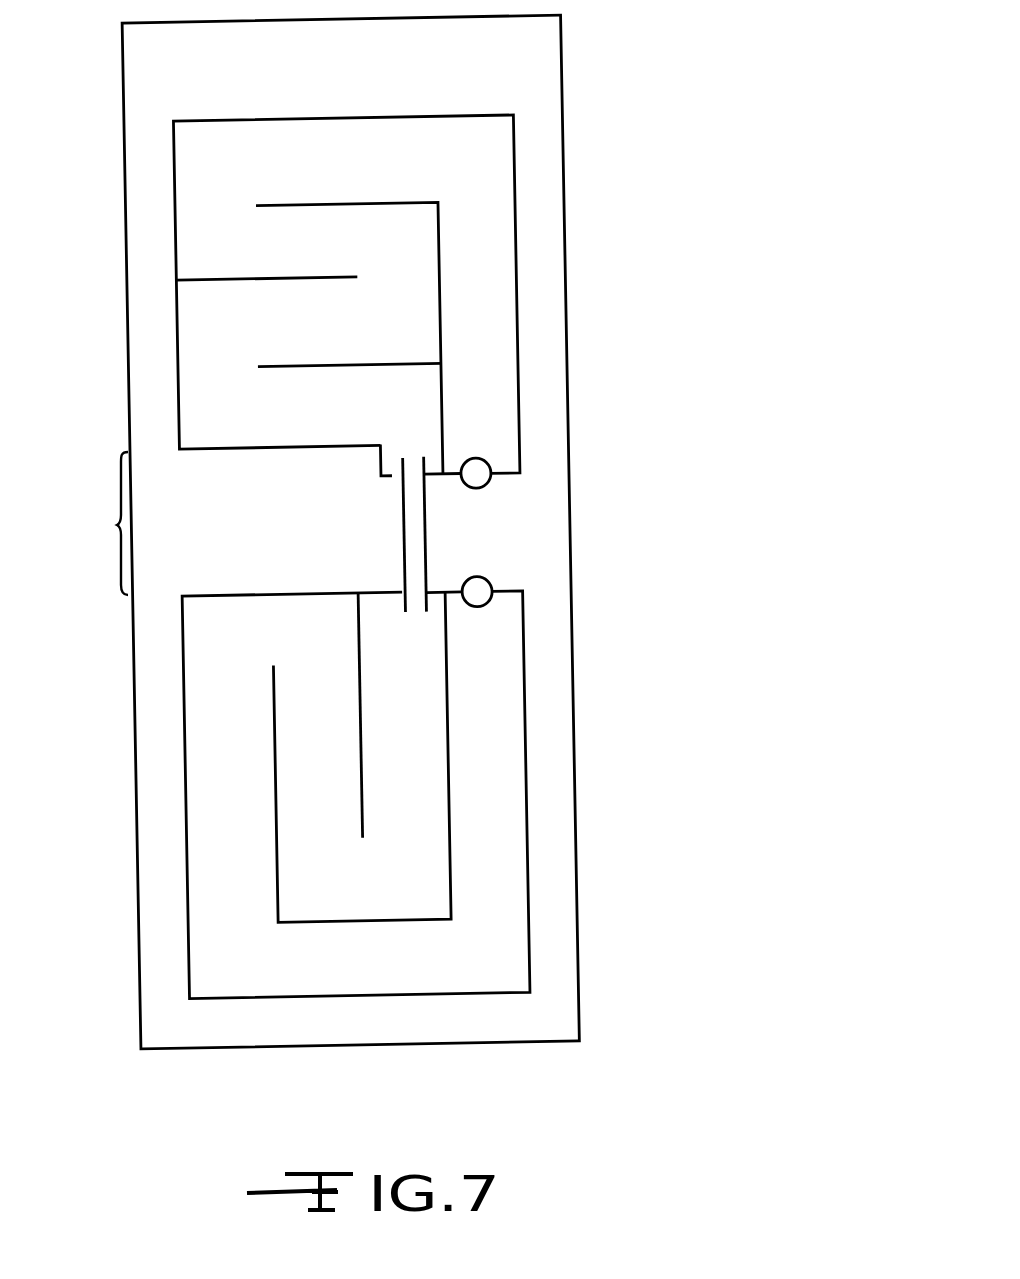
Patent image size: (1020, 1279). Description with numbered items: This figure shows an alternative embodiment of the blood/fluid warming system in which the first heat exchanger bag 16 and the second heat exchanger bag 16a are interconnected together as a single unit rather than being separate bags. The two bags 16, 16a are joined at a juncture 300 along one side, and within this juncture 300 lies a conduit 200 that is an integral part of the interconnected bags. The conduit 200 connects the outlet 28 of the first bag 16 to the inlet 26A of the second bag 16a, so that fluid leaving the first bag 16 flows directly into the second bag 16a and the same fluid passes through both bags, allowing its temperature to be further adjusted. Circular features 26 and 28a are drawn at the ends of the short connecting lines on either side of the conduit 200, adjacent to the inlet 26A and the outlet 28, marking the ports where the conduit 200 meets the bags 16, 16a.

The heat exchanger bag 16 is at (577, 841).
The heat exchanger bag 16a is at (565, 257).
The lower contact pad 26 is at (493, 583).
The inlet 26A is at (391, 477).
The outlet 28 is at (404, 590).
The upper contact pad 28a is at (485, 461).
The conduit 200 is at (426, 522).
The juncture 300 is at (117, 525).